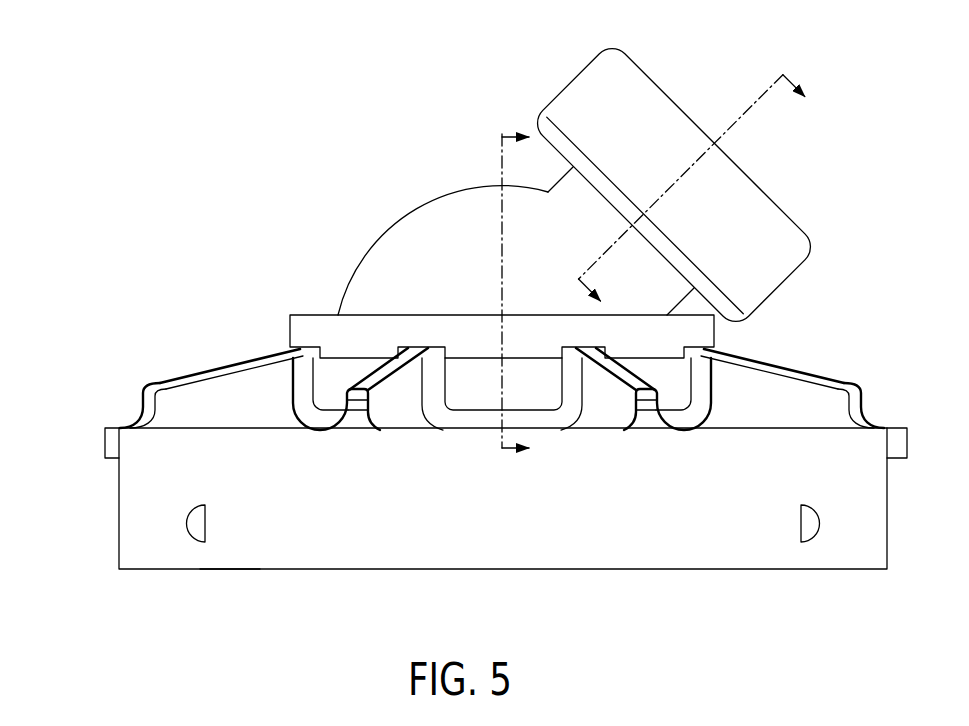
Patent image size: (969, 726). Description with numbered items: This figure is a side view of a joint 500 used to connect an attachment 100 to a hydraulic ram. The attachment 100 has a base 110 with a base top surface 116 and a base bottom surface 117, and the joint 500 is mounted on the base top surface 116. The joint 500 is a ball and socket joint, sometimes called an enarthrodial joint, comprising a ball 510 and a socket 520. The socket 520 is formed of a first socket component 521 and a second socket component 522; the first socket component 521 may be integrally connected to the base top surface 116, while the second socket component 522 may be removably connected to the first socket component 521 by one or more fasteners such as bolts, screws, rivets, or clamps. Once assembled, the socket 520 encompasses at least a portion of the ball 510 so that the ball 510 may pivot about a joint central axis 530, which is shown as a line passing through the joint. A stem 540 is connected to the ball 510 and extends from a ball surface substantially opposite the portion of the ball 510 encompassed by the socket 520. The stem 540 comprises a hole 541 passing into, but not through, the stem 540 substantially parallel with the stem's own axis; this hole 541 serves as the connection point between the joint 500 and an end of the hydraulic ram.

The attachment 100 is at (96, 447).
The base 110 is at (138, 520).
The base top surface 116 is at (120, 428).
The base bottom surface 117 is at (260, 570).
The joint 500 is at (326, 296).
The ball 510 is at (442, 249).
The socket 520 is at (312, 356).
The first socket component 521 is at (673, 383).
The second socket component 522 is at (302, 327).
The joint central axis 530 is at (497, 153).
The stem 540 is at (602, 109).
The hole 541 is at (740, 128).